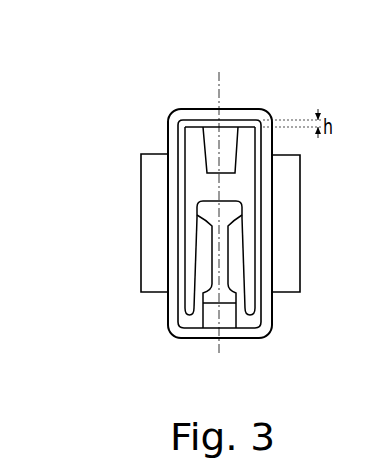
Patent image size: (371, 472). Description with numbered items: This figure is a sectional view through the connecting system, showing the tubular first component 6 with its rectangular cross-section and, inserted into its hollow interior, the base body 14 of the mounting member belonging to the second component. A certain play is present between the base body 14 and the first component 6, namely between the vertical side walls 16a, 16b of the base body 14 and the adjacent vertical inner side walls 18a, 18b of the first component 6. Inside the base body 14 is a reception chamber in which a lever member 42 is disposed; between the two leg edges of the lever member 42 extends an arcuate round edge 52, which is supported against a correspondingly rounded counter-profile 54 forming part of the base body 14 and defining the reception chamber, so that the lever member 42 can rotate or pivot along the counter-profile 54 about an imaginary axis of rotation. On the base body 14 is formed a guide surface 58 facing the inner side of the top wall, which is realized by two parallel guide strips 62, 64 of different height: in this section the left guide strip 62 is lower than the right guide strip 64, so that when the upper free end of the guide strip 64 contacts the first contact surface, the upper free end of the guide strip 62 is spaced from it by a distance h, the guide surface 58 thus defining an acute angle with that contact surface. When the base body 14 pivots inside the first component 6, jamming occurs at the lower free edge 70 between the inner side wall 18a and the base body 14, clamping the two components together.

The first component 6 is at (256, 338).
The base body 14 is at (270, 172).
The vertical side wall 16a is at (179, 240).
The vertical side wall 16b is at (261, 240).
The vertical inner side wall 18a is at (186, 190).
The vertical inner side wall 18b is at (247, 183).
The lever member 42 is at (261, 333).
The arcuate round edge 52 is at (208, 200).
The counter-profile 54 is at (205, 290).
The guide surface 58 is at (246, 124).
The guide strip 62 is at (196, 124).
The guide strip 64 is at (257, 124).
The lower free edge 70 is at (188, 318).